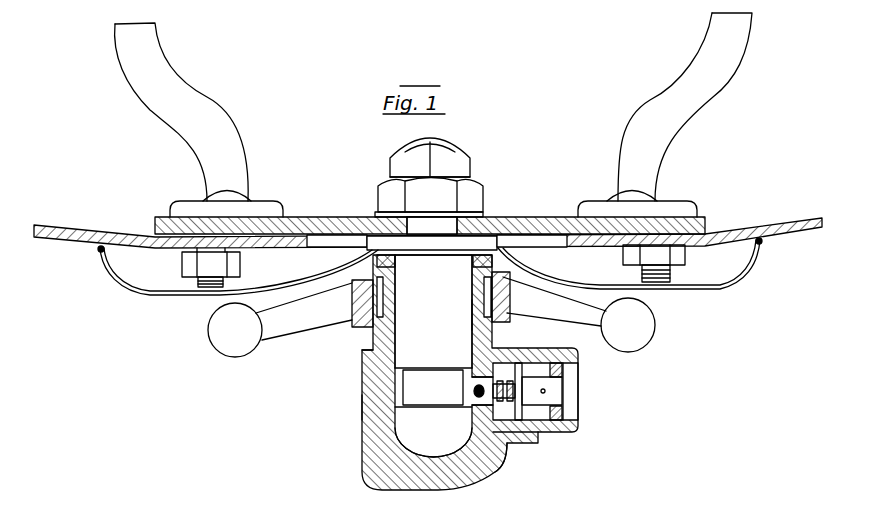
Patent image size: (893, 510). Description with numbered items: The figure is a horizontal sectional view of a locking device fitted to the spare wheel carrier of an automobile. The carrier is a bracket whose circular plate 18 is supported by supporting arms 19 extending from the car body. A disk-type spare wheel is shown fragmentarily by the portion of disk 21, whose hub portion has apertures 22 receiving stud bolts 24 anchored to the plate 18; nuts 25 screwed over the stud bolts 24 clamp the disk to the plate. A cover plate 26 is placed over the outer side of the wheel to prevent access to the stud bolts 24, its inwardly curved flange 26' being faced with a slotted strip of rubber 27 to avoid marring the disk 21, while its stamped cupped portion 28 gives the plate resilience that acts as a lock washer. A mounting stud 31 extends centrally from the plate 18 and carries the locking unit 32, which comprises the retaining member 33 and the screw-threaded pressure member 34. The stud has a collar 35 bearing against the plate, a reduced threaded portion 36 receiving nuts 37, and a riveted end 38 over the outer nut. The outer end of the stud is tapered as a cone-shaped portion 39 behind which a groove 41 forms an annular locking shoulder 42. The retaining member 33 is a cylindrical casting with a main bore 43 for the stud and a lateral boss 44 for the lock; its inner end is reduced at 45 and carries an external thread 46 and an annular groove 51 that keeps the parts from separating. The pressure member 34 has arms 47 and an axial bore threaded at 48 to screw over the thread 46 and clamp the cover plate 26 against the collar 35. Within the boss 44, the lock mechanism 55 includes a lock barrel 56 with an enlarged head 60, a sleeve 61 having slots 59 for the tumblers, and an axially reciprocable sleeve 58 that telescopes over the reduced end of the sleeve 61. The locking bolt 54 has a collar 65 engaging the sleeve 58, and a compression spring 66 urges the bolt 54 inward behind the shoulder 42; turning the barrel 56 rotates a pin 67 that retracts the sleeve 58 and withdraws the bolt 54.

The circular plate 18 is at (693, 207).
The supporting arms 19 is at (148, 102).
The disk 21 is at (65, 230).
The apertures 22 is at (225, 258).
The stud bolts 24 is at (200, 282).
The nuts 25 is at (188, 267).
The cover plate 26 is at (629, 286).
The inwardly curved flange 26' is at (230, 290).
The slotted strip of rubber 27 is at (98, 250).
The cupped portion 28 is at (530, 230).
The mounting stud 31 is at (457, 253).
The locking unit 32 is at (362, 358).
The retaining member 33 is at (366, 407).
The pressure member 34 is at (353, 246).
The collar 35 is at (433, 242).
The reduced threaded portion 36 is at (441, 224).
The nuts 37 is at (400, 165).
The riveted end 38 is at (433, 142).
The cone-shaped portion 39 is at (413, 437).
The groove 41 is at (400, 383).
The annular locking shoulder 42 is at (446, 386).
The main bore 43 is at (470, 303).
The boss 44 is at (542, 433).
The reduced portion 45 is at (470, 310).
The external thread 46 is at (503, 262).
The arms 47 is at (280, 327).
The threaded axial bore 48 is at (433, 311).
The annular groove 51 is at (368, 327).
The locking bolt 54 is at (503, 448).
The lock mechanism 55 is at (580, 390).
The lock barrel 56 is at (557, 402).
The axially reciprocable sleeve 58 is at (495, 362).
The slots 59 is at (540, 430).
The enlarged head 60 is at (563, 371).
The sleeve 61 is at (563, 420).
The collar 65 is at (477, 368).
The compression spring 66 is at (477, 402).
The pin 67 is at (526, 368).